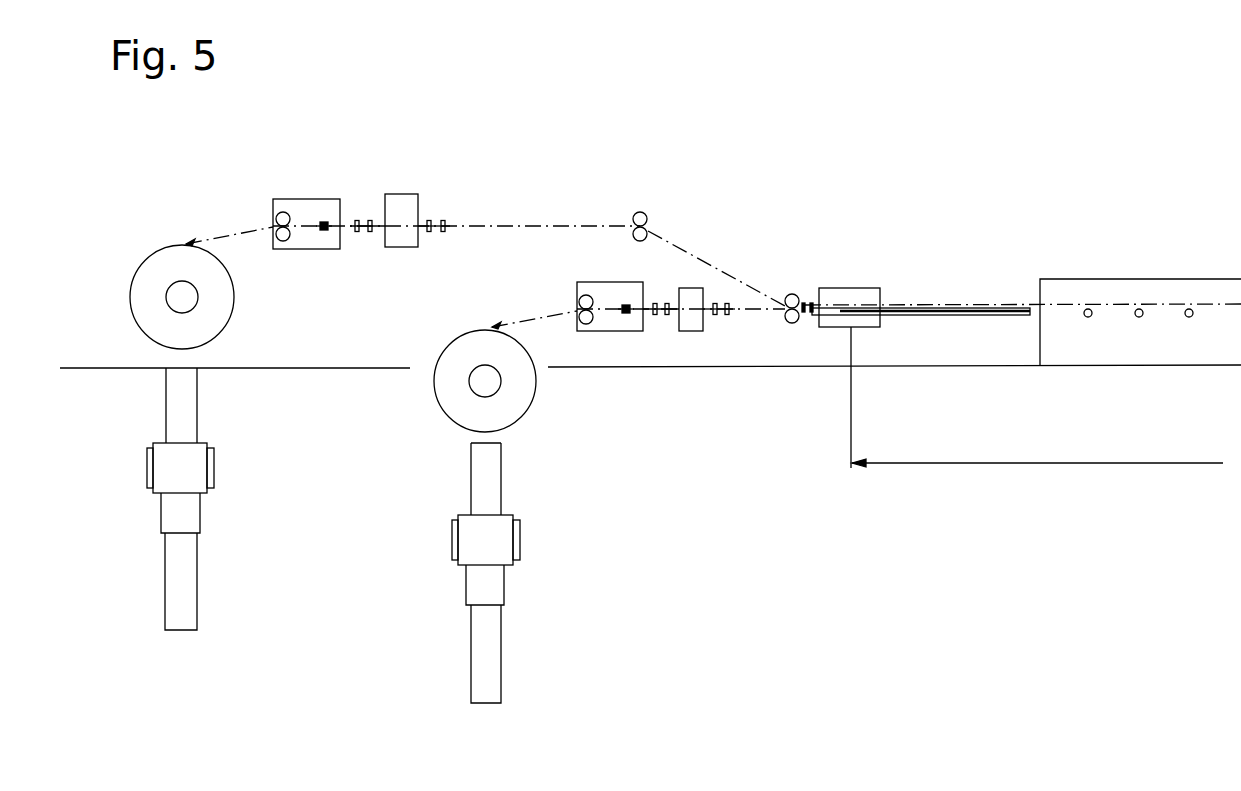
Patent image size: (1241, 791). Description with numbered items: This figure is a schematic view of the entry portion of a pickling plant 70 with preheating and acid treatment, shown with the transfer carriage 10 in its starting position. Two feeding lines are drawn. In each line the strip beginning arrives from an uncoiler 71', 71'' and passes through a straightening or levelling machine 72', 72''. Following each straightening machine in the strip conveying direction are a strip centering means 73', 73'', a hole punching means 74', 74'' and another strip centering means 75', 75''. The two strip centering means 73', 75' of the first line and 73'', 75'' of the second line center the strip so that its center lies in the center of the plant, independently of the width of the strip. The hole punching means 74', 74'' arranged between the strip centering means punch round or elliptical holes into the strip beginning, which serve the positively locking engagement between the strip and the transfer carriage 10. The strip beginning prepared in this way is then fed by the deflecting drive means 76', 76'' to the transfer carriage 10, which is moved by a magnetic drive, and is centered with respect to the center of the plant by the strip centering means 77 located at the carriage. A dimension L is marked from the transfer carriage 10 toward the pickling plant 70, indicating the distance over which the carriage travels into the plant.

The transfer carriage 10 is at (863, 293).
The pickling plant 70 is at (1090, 287).
The uncoiler 71' is at (215, 437).
The uncoiler 71'' is at (465, 516).
The straightening or levelling machine 72' is at (321, 189).
The straightening or levelling machine 72'' is at (604, 377).
The strip centering means 73' is at (397, 167).
The strip centering means 73'' is at (659, 369).
The hole punching means 74' is at (442, 192).
The hole punching means 74'' is at (710, 373).
The strip centering means 75' is at (477, 206).
The strip centering means 75'' is at (746, 409).
The deflecting drive means 76' is at (674, 188).
The deflecting drive means 76'' is at (821, 264).
The strip centering means 77 is at (807, 297).
The length dimension L is at (1057, 463).